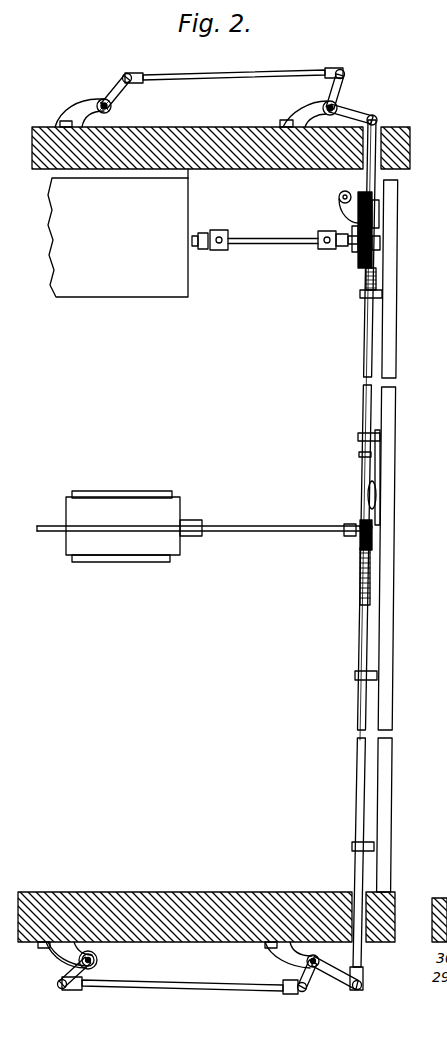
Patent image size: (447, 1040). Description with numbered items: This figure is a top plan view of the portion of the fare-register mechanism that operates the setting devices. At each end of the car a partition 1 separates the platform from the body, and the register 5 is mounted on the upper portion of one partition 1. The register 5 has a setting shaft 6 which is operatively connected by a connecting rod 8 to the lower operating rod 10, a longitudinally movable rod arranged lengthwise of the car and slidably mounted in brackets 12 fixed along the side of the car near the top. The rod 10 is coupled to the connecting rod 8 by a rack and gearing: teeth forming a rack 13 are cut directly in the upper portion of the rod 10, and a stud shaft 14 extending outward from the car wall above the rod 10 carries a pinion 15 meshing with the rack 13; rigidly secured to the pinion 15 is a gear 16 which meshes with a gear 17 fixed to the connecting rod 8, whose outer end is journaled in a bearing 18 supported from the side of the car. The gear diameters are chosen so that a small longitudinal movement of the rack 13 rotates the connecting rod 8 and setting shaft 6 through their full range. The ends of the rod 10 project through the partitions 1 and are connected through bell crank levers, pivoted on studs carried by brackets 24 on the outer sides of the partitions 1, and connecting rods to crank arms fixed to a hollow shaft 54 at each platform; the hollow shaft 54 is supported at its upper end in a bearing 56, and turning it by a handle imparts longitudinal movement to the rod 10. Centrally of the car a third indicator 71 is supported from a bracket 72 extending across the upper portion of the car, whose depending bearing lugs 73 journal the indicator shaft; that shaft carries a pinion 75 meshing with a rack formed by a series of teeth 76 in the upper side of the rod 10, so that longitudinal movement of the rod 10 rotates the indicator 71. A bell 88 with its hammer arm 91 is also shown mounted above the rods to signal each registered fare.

The partition 1 is at (273, 172).
The register 5 is at (150, 294).
The setting shaft 6 is at (202, 232).
The connecting rod 8 is at (262, 236).
The operating rod 10 is at (362, 622).
The brackets 12 is at (362, 306).
The rack 13 is at (368, 284).
The stud shaft 14 is at (373, 222).
The pinion 15 is at (372, 208).
The gear 16 is at (358, 222).
The gear 17 is at (357, 266).
The bearing 18 is at (376, 246).
The brackets 24 is at (302, 114).
The hollow shaft 54 is at (78, 966).
The bearing 56 is at (100, 962).
The central indicator 71 is at (130, 546).
The bracket 72 is at (48, 526).
The bearing lugs 73 is at (348, 523).
The pinion 75 is at (372, 527).
The teeth 76 is at (360, 562).
The bell 88 is at (376, 498).
The hammer arm 91 is at (380, 470).